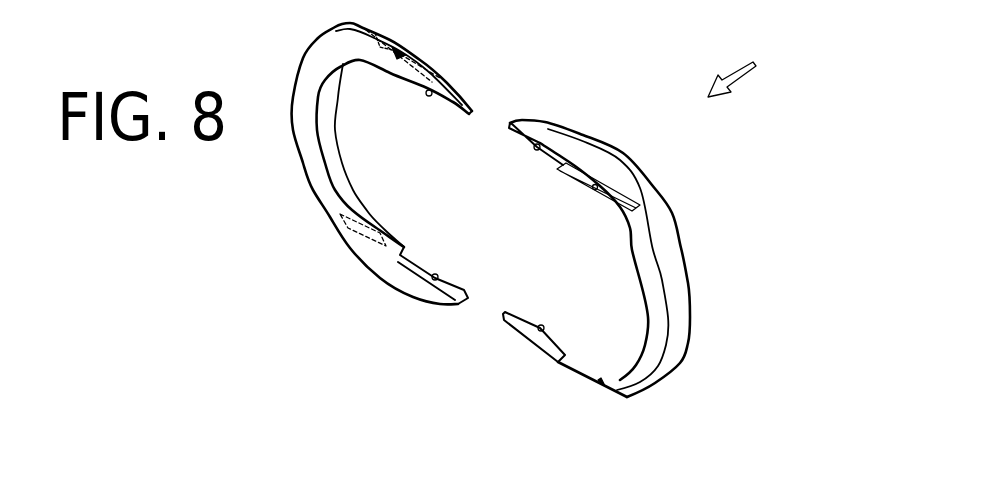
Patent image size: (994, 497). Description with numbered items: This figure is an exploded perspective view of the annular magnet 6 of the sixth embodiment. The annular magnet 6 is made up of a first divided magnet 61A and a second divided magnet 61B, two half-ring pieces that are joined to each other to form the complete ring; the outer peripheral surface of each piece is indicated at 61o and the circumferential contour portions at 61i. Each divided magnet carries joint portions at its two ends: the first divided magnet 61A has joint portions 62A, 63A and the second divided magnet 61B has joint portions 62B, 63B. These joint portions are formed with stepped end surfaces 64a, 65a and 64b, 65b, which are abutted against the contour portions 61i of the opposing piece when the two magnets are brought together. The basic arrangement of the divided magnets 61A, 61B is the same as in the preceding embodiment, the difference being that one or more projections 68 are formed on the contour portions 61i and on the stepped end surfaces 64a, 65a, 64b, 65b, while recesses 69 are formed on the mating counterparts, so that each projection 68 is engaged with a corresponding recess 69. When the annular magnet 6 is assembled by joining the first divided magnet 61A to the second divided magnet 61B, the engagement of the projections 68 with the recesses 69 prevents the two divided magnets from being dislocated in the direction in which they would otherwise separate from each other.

The annular magnet 6 is at (740, 66).
The first divided magnet 61A is at (266, 72).
The second divided magnet 61B is at (711, 263).
The outer peripheral surface 61o is at (453, 82).
The circumferential contour portion 61i is at (450, 100).
The joint portion 62A is at (466, 54).
The joint portion 62B is at (593, 112).
The joint portion 63A is at (358, 288).
The joint portion 63B is at (495, 346).
The stepped end surface 64a is at (396, 55).
The stepped end surface 64b is at (587, 180).
The stepped end surface 65a is at (345, 233).
The stepped end surface 65b is at (558, 362).
The projection 68 is at (427, 96).
The recess 69 is at (373, 46).